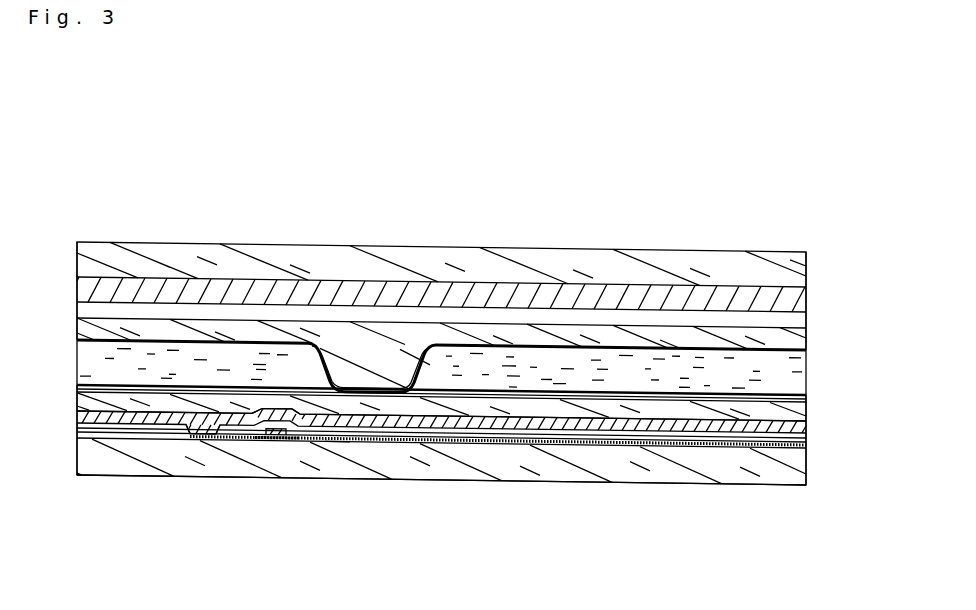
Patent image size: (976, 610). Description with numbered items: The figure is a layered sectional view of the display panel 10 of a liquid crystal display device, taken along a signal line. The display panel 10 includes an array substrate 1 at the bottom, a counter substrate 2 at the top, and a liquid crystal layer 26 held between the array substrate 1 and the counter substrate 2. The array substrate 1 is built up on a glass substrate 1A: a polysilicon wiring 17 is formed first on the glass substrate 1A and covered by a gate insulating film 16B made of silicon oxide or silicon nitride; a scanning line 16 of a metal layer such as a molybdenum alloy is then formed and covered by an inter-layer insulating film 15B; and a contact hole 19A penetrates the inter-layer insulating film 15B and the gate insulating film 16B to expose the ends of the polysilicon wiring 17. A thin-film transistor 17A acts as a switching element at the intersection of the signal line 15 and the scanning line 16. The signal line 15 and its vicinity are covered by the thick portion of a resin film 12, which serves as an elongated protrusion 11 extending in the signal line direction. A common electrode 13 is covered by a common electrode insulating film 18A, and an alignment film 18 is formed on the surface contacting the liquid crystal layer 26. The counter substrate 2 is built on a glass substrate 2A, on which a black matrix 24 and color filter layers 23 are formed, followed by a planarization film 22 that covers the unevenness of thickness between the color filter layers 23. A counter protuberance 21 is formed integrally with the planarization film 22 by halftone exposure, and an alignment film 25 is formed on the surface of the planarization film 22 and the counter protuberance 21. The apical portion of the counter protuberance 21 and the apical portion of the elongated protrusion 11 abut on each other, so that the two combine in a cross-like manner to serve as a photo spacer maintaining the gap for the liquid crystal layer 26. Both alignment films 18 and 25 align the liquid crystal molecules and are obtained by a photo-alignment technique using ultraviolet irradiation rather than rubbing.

The display panel 10 is at (149, 230).
The counter substrate 2 is at (850, 249).
The glass substrate 2A is at (806, 264).
The black matrix 24 is at (806, 290).
The color filter layer 23 is at (806, 310).
The planarization film 22 is at (806, 325).
The alignment film 25 is at (806, 347).
The counter protuberance 21 is at (367, 373).
The liquid crystal layer 26 is at (772, 366).
The alignment film 18 is at (806, 393).
The common electrode insulating film 18A is at (806, 398).
The common electrode 13 is at (806, 418).
The elongated protrusion 11 is at (806, 424).
The resin film 12 is at (441, 413).
The contact hole 19A is at (216, 442).
The scanning line 16 is at (274, 432).
The thin-film transistor 17A is at (279, 446).
The polysilicon wiring 17 is at (337, 438).
The signal line 15 is at (806, 437).
The inter-layer insulating film 15B is at (806, 441).
The gate insulating film 16B is at (806, 446).
The glass substrate 1A is at (806, 470).
The array substrate 1 is at (874, 512).